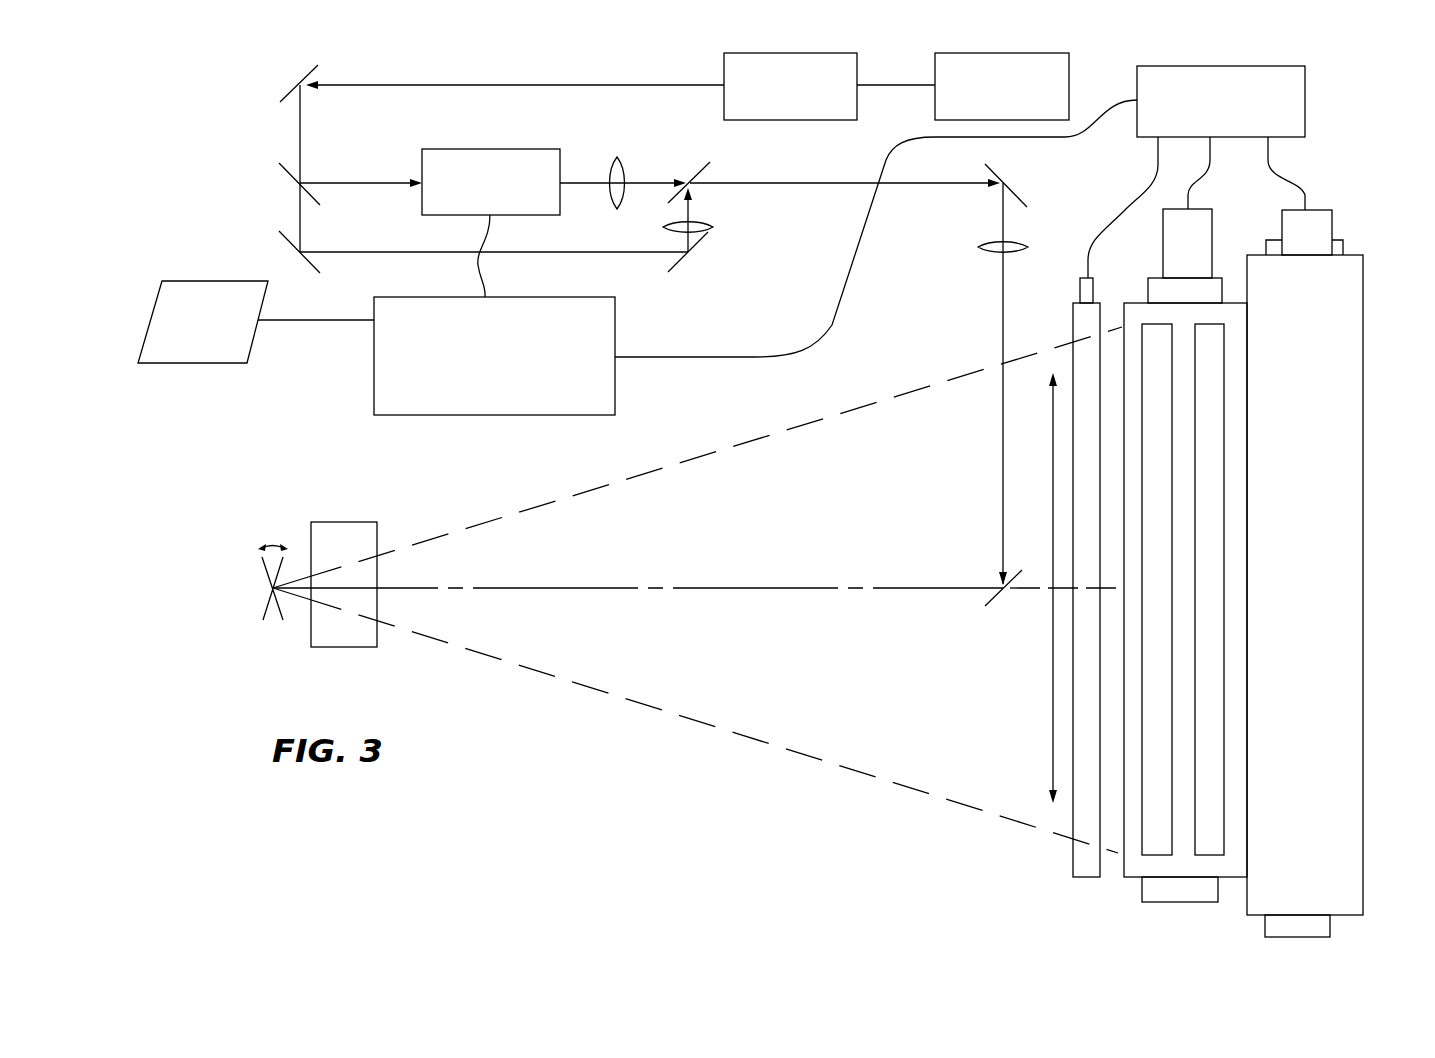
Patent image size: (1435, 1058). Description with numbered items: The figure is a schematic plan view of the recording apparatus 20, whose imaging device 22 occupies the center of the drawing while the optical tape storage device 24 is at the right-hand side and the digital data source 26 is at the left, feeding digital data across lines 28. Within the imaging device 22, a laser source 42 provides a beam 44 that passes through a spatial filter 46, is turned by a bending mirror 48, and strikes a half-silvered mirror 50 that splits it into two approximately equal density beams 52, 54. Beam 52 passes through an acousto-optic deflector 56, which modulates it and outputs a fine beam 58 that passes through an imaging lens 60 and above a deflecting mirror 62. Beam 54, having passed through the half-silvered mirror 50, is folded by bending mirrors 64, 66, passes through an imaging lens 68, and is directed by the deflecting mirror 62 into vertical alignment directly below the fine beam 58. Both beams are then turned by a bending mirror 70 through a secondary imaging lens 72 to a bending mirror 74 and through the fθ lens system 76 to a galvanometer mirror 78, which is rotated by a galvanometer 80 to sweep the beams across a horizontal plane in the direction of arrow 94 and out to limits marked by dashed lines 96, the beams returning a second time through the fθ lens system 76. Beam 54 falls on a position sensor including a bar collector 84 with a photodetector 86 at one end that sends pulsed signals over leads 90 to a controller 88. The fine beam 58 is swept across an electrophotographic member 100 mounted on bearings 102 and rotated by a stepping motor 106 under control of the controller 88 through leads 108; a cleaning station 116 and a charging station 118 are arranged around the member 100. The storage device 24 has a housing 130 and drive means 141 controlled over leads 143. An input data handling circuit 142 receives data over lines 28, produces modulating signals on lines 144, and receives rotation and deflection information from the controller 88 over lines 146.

The recording apparatus 20 is at (333, 55).
The imaging device 22 is at (549, 68).
The optical tape storage device 24 is at (1361, 205).
The digital data source 26 is at (195, 281).
The lines 28 is at (320, 322).
The laser source 42 is at (1017, 53).
The beam 44 is at (648, 84).
The spatial filter 46 is at (797, 53).
The bending mirror 48 is at (295, 84).
The half-silvered mirror 50 is at (287, 184).
The beam 52 is at (343, 183).
The beam 54 is at (301, 210).
The acousto-optic deflector 56 is at (495, 149).
The fine beam 58 is at (600, 183).
The imaging lens 60 is at (626, 176).
The deflecting mirror 62 is at (693, 170).
The bending mirror 64 is at (291, 252).
The bending mirror 66 is at (688, 262).
The imaging lens 68 is at (712, 227).
The bending mirror 70 is at (1010, 176).
The secondary imaging lens 72 is at (1022, 243).
The bending mirror 74 is at (1005, 598).
The fθ lens system 76 is at (380, 535).
The galvanometer mirror 78 is at (258, 598).
The galvanometer 80 is at (1062, 333).
The bar collector 84 is at (1073, 315).
The photodetector 86 is at (1079, 285).
The controller 88 is at (1230, 66).
The leads 90 is at (1123, 208).
The arrow 94 is at (1051, 482).
The dashed lines 96 is at (750, 437).
The electrophotographic member 100 is at (1108, 885).
The bearings 102 is at (1147, 290).
The stepping motor 106 is at (1162, 242).
The leads 108 is at (1201, 172).
The cleaning station 116 is at (1203, 538).
The charging station 118 is at (1153, 499).
The housing 130 is at (1364, 610).
The drive means 141 is at (1344, 232).
The input data handling circuit 142 is at (616, 333).
The leads 143 is at (1298, 165).
The lines 144 is at (477, 266).
The lines 146 is at (808, 347).